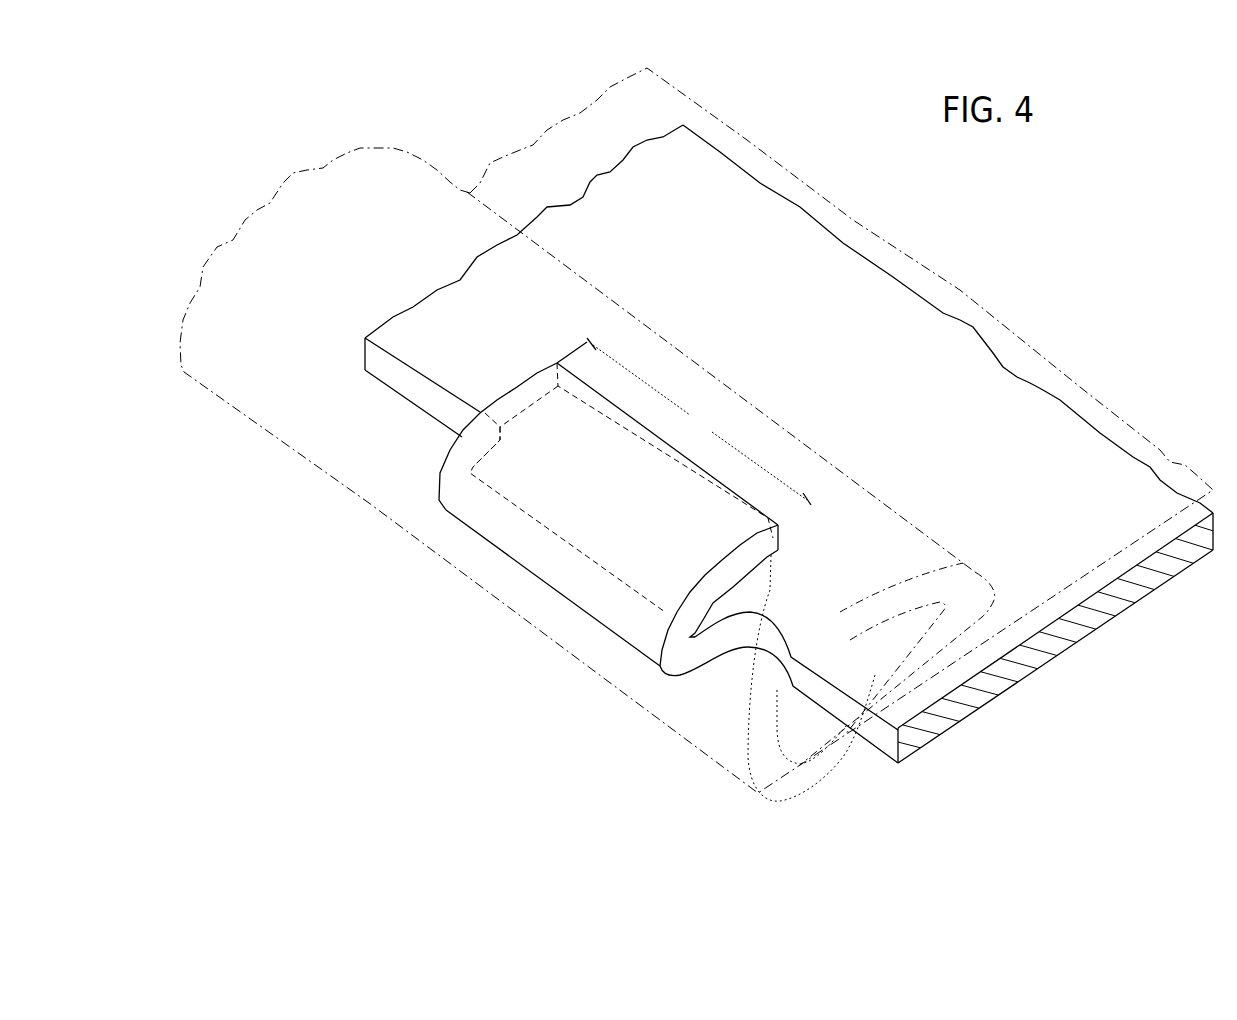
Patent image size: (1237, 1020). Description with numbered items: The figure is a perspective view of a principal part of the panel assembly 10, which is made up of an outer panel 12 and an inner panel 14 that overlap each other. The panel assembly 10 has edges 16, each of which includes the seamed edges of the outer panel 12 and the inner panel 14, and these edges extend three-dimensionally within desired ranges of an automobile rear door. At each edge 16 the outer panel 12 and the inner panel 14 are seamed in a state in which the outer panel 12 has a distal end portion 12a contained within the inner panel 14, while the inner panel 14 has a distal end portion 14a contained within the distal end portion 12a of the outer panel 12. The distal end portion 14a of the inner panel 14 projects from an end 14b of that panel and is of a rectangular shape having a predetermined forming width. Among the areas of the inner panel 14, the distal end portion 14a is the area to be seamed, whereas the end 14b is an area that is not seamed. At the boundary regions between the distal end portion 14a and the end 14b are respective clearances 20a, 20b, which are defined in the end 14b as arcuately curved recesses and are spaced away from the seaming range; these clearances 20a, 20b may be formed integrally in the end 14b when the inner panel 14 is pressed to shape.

The panel assembly 10 is at (1085, 212).
The outer panel 12 is at (707, 753).
The distal end portion of the outer panel 12a is at (840, 640).
The inner panel 14 is at (1153, 460).
The distal end portion of the inner panel 14a is at (547, 407).
The end of the inner panel 14b is at (838, 745).
The edge 16 is at (538, 340).
The clearance 20a is at (746, 650).
The clearance 20b is at (503, 445).